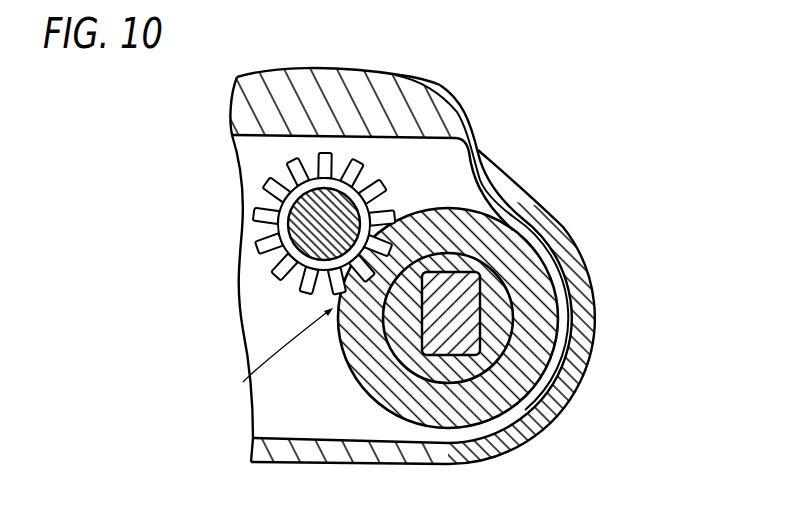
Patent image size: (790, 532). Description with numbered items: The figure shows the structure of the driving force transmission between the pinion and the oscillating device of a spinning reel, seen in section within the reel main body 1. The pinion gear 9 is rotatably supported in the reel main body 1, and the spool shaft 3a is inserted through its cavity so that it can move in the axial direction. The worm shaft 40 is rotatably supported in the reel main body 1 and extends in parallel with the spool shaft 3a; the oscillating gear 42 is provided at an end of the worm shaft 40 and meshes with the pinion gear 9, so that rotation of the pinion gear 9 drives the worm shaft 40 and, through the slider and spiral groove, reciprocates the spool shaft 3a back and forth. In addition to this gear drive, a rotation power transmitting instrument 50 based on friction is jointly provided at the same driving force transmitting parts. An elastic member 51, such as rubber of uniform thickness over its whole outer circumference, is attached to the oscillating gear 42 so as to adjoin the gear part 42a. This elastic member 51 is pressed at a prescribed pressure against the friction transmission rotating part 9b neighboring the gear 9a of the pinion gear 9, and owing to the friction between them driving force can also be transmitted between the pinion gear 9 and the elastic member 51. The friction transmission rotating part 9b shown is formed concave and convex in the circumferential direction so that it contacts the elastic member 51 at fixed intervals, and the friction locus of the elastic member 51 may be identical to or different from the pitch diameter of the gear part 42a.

The reel main body 1 is at (524, 200).
The spool shaft 3a is at (318, 228).
The pinion gear 9 is at (284, 258).
The gear 9a is at (280, 186).
The friction transmission rotating part 9b is at (387, 188).
The worm shaft 40 is at (470, 322).
The oscillating gear 42 is at (480, 345).
The gear part 42a is at (543, 276).
The rotation power transmitting instrument 50 is at (271, 352).
The elastic member 51 is at (538, 241).